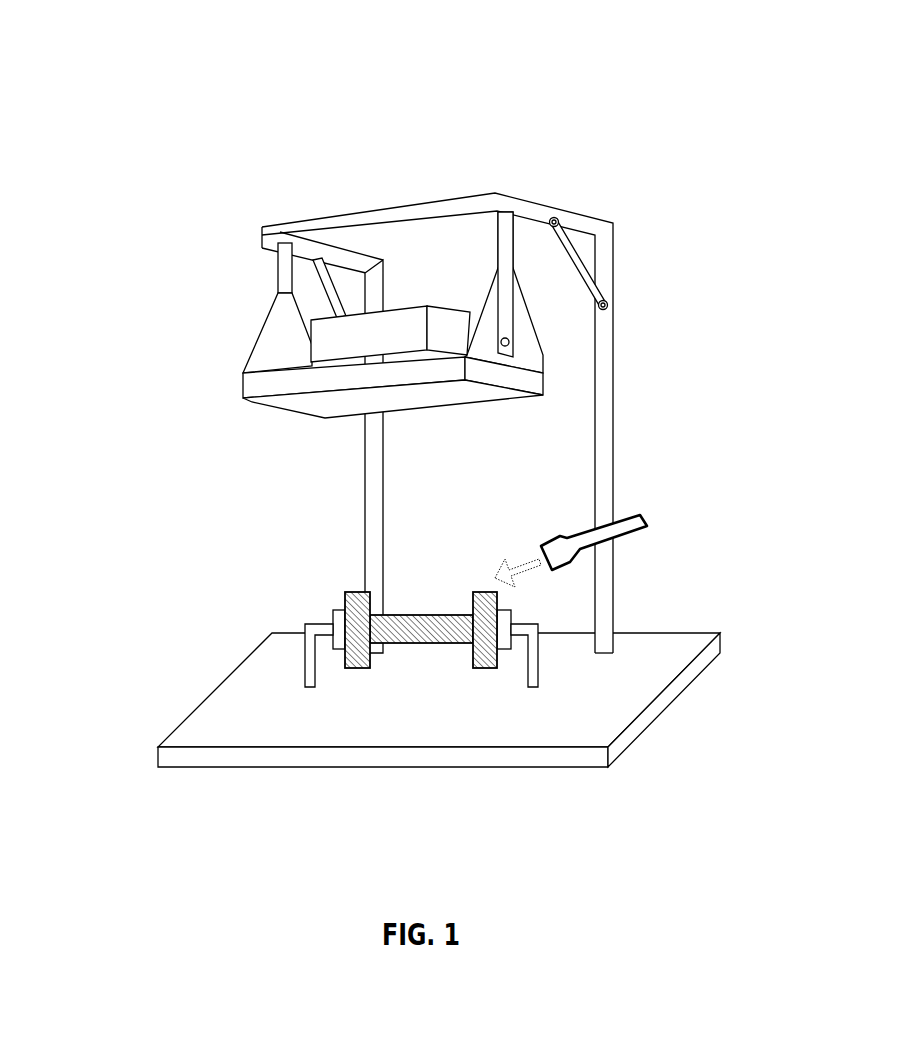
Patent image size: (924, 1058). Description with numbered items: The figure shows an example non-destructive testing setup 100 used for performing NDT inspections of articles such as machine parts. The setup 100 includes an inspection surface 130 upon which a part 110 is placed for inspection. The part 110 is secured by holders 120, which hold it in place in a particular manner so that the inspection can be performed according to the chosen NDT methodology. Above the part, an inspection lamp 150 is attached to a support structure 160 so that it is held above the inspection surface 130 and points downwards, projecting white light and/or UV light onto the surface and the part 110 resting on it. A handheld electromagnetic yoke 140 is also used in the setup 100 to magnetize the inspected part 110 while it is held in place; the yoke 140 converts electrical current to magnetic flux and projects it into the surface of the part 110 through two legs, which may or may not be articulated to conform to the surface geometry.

The non-destructive testing setup 100 is at (97, 120).
The part 110 is at (345, 597).
The holders 120 is at (530, 692).
The inspection surface 130 is at (665, 652).
The electromagnetic yoke 140 is at (650, 520).
The lamp 150 is at (237, 373).
The support structure 160 is at (618, 410).